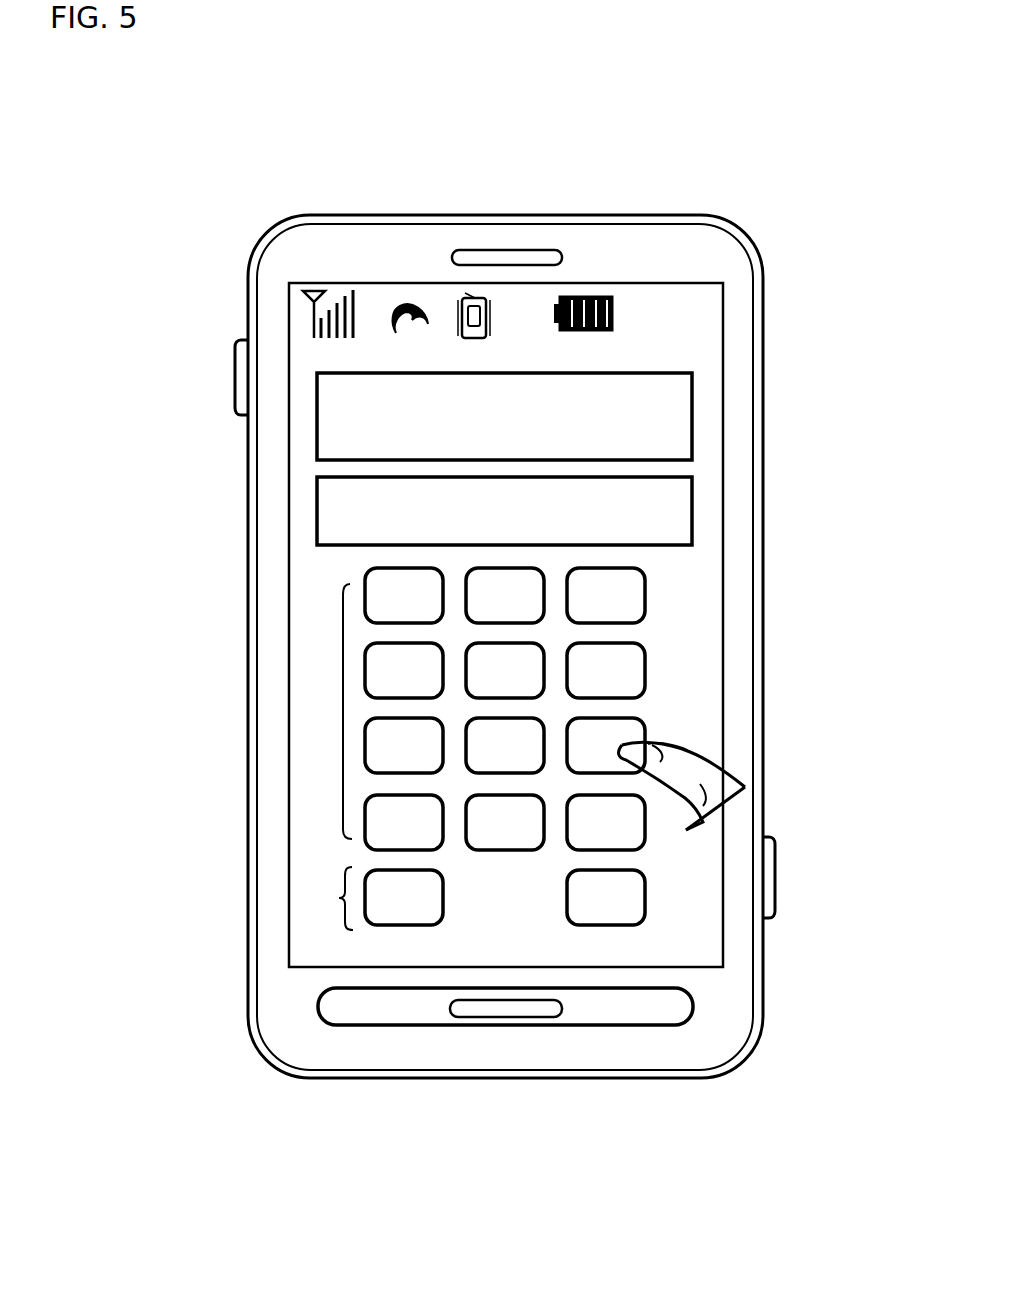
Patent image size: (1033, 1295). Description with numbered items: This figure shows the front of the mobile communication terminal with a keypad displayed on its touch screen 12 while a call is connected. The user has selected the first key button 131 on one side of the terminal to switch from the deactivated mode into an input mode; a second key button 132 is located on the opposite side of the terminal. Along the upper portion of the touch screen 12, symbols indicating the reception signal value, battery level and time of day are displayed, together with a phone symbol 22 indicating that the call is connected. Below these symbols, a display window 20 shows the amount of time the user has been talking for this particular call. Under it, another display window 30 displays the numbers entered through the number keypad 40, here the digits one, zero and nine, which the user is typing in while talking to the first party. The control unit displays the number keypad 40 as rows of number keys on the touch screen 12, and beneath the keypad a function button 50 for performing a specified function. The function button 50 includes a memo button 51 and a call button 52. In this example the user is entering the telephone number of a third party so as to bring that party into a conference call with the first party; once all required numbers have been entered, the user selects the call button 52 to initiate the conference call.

The touch screen 12 is at (723, 357).
The phone symbol 22 is at (404, 301).
The display window 20 is at (692, 412).
The display window 30 is at (692, 505).
The number keypad 40 is at (343, 712).
The function button 50 is at (392, 1027).
The memo button 51 is at (411, 925).
The call button 52 is at (604, 925).
The first key button 131 is at (775, 875).
The second key button 132 is at (243, 380).